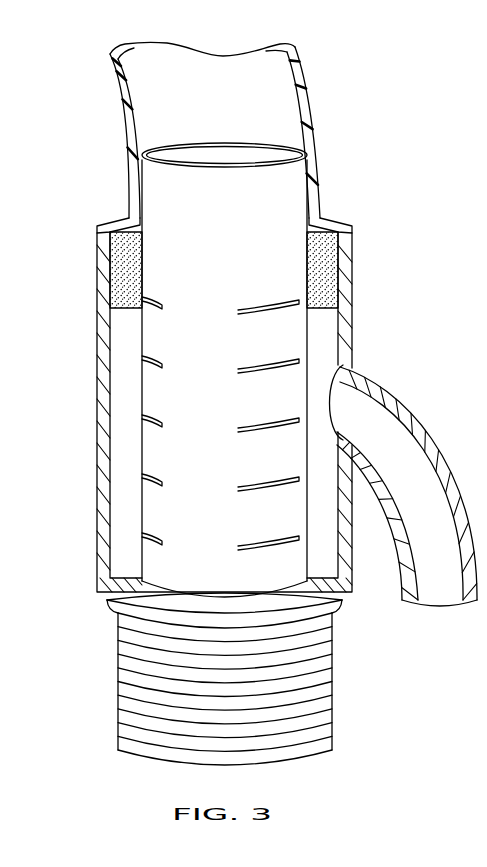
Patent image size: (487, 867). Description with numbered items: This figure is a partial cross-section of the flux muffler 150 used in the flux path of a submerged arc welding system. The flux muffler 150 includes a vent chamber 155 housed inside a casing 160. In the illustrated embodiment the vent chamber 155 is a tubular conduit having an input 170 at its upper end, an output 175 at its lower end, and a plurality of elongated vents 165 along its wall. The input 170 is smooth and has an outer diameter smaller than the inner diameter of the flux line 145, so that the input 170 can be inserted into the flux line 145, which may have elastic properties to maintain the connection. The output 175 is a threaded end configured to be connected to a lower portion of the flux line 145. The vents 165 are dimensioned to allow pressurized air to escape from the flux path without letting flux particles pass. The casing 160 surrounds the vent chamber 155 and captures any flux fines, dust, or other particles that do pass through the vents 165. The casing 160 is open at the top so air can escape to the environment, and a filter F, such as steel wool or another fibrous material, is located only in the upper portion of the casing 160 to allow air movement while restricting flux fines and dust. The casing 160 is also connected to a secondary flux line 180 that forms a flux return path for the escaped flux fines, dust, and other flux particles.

The flux line 145 is at (290, 100).
The flux muffler 150 is at (102, 175).
The vent chamber 155 is at (295, 287).
The casing 160 is at (102, 393).
The vents 165 is at (286, 363).
The input 170 is at (293, 192).
The output 175 is at (333, 718).
The secondary flux line 180 is at (417, 476).
The filter F is at (100, 257).